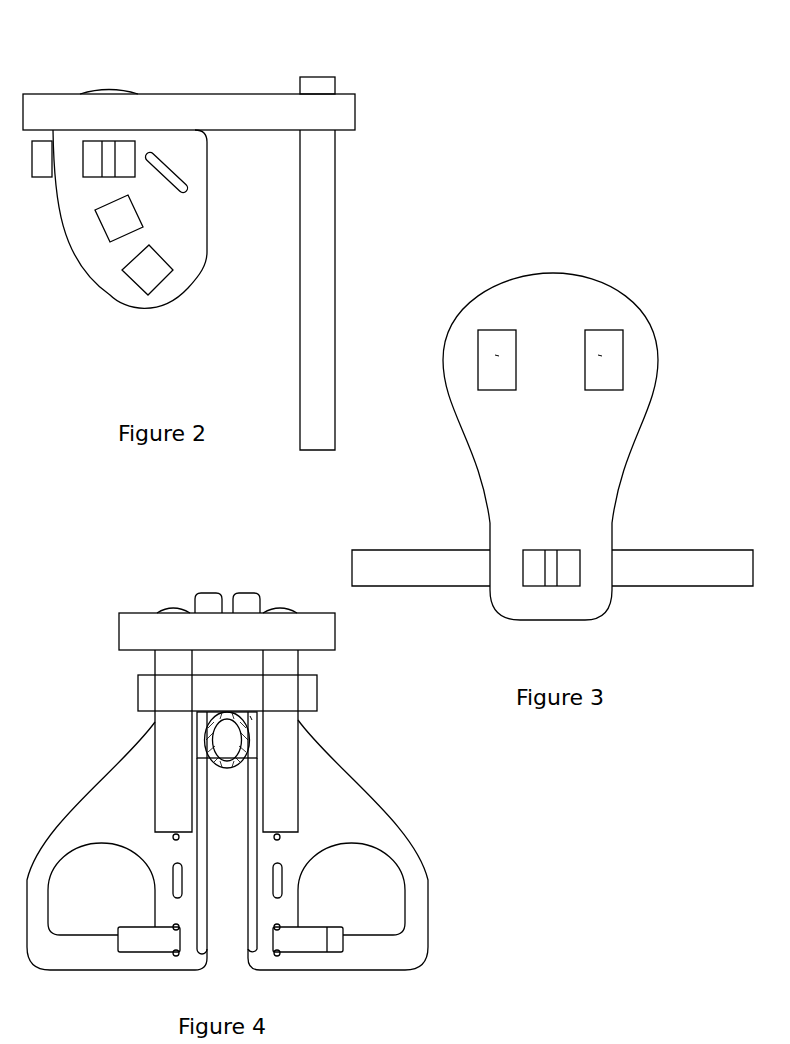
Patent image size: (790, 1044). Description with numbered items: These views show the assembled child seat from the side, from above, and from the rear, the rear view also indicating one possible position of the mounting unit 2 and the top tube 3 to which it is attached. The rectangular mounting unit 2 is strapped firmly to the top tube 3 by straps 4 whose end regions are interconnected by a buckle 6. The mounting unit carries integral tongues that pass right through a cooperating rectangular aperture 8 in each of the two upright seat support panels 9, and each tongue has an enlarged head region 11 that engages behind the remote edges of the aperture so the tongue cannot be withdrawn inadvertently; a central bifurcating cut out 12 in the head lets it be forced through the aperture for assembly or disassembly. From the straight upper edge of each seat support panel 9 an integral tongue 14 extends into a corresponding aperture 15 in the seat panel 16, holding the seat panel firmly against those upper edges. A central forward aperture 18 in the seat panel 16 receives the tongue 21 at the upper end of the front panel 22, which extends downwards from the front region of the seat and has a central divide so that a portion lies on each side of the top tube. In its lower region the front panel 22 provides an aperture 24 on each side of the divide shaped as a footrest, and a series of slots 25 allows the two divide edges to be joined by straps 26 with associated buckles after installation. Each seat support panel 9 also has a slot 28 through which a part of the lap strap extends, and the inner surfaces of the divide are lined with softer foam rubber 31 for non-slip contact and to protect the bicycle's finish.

In FIG. 2, the mounting unit 2 is at (43, 160).
In FIG. 4, the mounting unit 2 is at (227, 694).
In FIG. 4, the top tube 3 is at (203, 743).
In FIG. 4, the straps 4 is at (200, 722).
In FIG. 4, the buckle 6 is at (252, 718).
In FIG. 2, the rectangular aperture 8 is at (147, 246).
In FIG. 2, the seat support panels 9 is at (95, 252).
In FIG. 4, the seat support panels 9 is at (173, 802).
In FIG. 2, the enlarged head region 11 is at (127, 157).
In FIG. 2, the central bifurcating cut out 12 is at (107, 153).
In FIG. 2, the tongue 14 is at (117, 90).
In FIG. 3, the tongue 14 is at (495, 355).
In FIG. 3, the apertures 15 is at (516, 330).
In FIG. 2, the seat panel 16 is at (162, 117).
In FIG. 3, the seat panel 16 is at (553, 430).
In FIG. 3, the central forward aperture 18 is at (563, 550).
In FIG. 2, the tongue 21 is at (317, 85).
In FIG. 3, the tongue 21 is at (565, 567).
In FIG. 4, the tongue 21 is at (208, 600).
In FIG. 2, the front panel 22 is at (313, 257).
In FIG. 3, the front panel 22 is at (673, 575).
In FIG. 4, the front panel 22 is at (118, 823).
In FIG. 4, the aperture 24 is at (105, 897).
In FIG. 4, the slots 25 is at (178, 880).
In FIG. 4, the straps 26 is at (155, 937).
In FIG. 2, the slot 28 is at (163, 163).
In FIG. 4, the foam rubber lining 31 is at (207, 818).